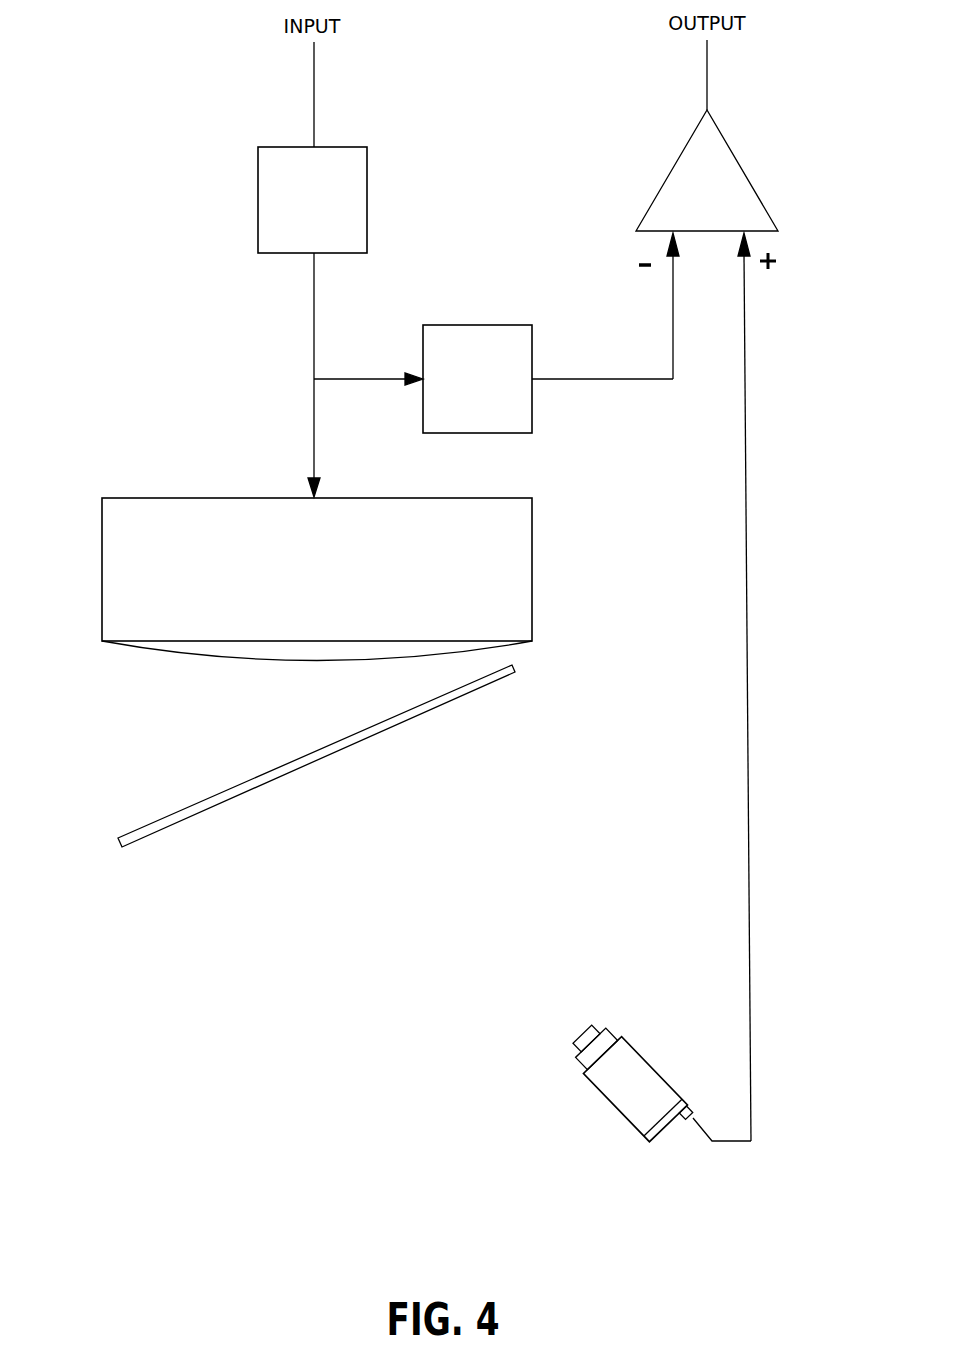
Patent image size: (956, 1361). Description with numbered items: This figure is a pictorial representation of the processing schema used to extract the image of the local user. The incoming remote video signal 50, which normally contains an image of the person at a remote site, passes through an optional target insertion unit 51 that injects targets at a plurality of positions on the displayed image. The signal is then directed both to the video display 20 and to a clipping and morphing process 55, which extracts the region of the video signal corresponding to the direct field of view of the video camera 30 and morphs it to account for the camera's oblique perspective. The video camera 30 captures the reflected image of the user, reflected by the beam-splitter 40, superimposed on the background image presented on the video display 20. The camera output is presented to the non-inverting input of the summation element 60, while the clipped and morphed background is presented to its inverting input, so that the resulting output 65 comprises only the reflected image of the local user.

The video display 20 is at (102, 515).
The video camera 30 is at (668, 1073).
The beam-splitter 40 is at (516, 673).
The remote video signal 50 is at (312, 92).
The target insertion unit 51 is at (258, 198).
The clipping and morphing process 55 is at (479, 325).
The summation element 60 is at (680, 158).
The output 65 is at (706, 72).